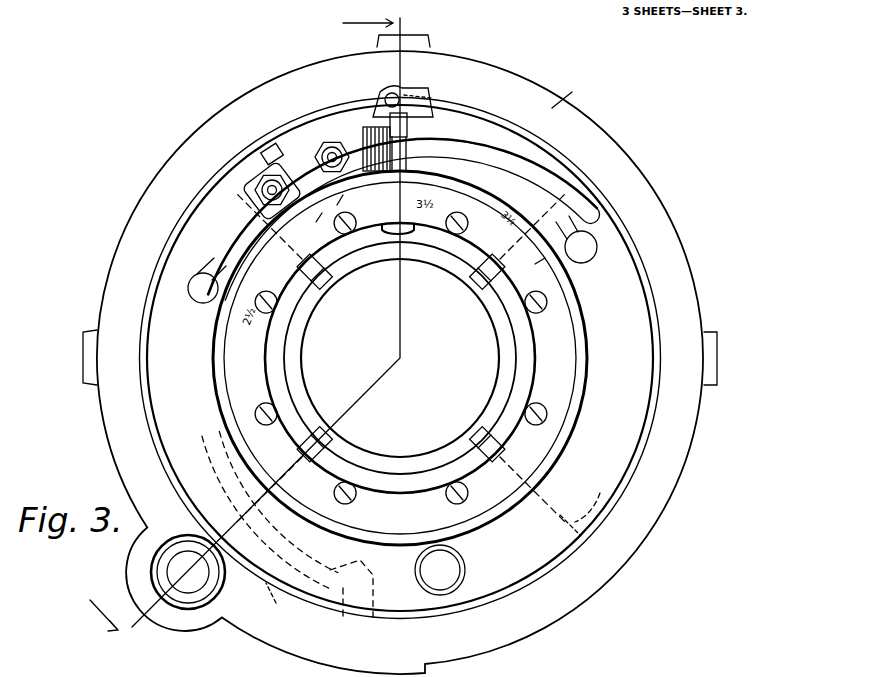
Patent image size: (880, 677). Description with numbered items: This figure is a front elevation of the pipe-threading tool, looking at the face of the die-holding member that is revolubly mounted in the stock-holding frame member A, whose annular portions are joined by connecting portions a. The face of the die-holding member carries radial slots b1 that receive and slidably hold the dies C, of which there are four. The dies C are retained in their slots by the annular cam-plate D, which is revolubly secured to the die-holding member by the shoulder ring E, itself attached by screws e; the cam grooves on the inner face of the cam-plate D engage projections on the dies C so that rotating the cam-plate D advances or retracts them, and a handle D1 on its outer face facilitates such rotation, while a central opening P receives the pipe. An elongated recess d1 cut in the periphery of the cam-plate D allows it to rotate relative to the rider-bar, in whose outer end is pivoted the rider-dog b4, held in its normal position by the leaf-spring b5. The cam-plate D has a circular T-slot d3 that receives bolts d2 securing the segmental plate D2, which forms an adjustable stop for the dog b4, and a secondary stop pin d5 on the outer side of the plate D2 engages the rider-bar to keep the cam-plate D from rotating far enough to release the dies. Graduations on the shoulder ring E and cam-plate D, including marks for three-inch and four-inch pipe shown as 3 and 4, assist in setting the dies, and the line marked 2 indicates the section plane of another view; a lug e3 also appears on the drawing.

The annular plate D is at (400, 362).
The connecting portions a is at (415, 34).
The shoulder ring E is at (400, 358).
The bore / spindle P is at (378, 460).
The dies C is at (330, 283).
The screws e is at (356, 221).
The elongated recess d1 is at (538, 160).
The T-slot d3 is at (225, 248).
The lug e3 is at (579, 201).
The bolts d2 is at (327, 147).
The segmental plate D2 is at (278, 191).
The secondary stop pin d5 is at (268, 147).
The rider-dog b4 is at (410, 127).
The leaf-spring b5 is at (410, 84).
The stock-holding frame member A is at (571, 87).
The handle D1 is at (440, 570).
The radial slots b1 is at (433, 553).
The section line 2- 2 is at (246, 335).
The scale mark 3 is at (329, 203).
The scale mark 4 is at (541, 264).